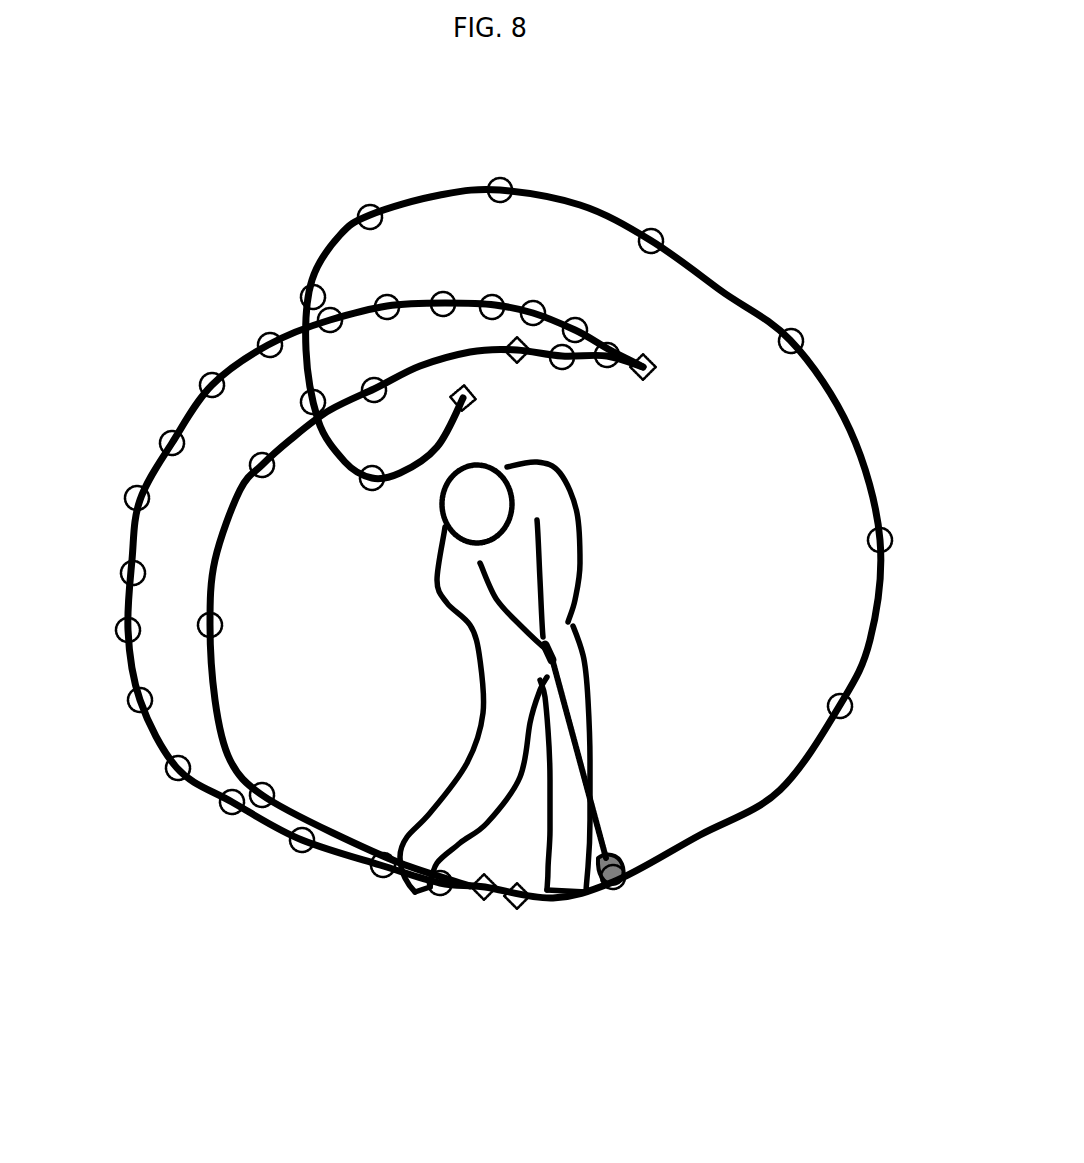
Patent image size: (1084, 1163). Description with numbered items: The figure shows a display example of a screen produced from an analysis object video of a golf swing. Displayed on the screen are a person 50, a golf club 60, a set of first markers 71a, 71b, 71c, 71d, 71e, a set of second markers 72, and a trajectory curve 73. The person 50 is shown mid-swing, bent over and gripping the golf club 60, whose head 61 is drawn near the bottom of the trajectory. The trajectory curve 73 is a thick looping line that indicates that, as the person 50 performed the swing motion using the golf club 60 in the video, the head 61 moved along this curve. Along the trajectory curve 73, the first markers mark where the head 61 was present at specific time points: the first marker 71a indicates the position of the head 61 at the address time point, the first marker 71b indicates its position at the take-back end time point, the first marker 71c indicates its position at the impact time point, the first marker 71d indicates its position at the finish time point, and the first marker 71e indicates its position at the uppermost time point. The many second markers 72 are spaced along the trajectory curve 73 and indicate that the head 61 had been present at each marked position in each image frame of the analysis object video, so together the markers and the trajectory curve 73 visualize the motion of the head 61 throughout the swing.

The person 50 is at (565, 470).
The golf club 60 is at (598, 775).
The head 61 is at (622, 860).
The first marker 71a is at (480, 898).
The first marker 71b is at (652, 357).
The first marker 71c is at (527, 900).
The first marker 71d is at (474, 404).
The first marker 71e is at (517, 362).
The second marker 72 is at (507, 183).
The trajectory curve 73 is at (855, 425).